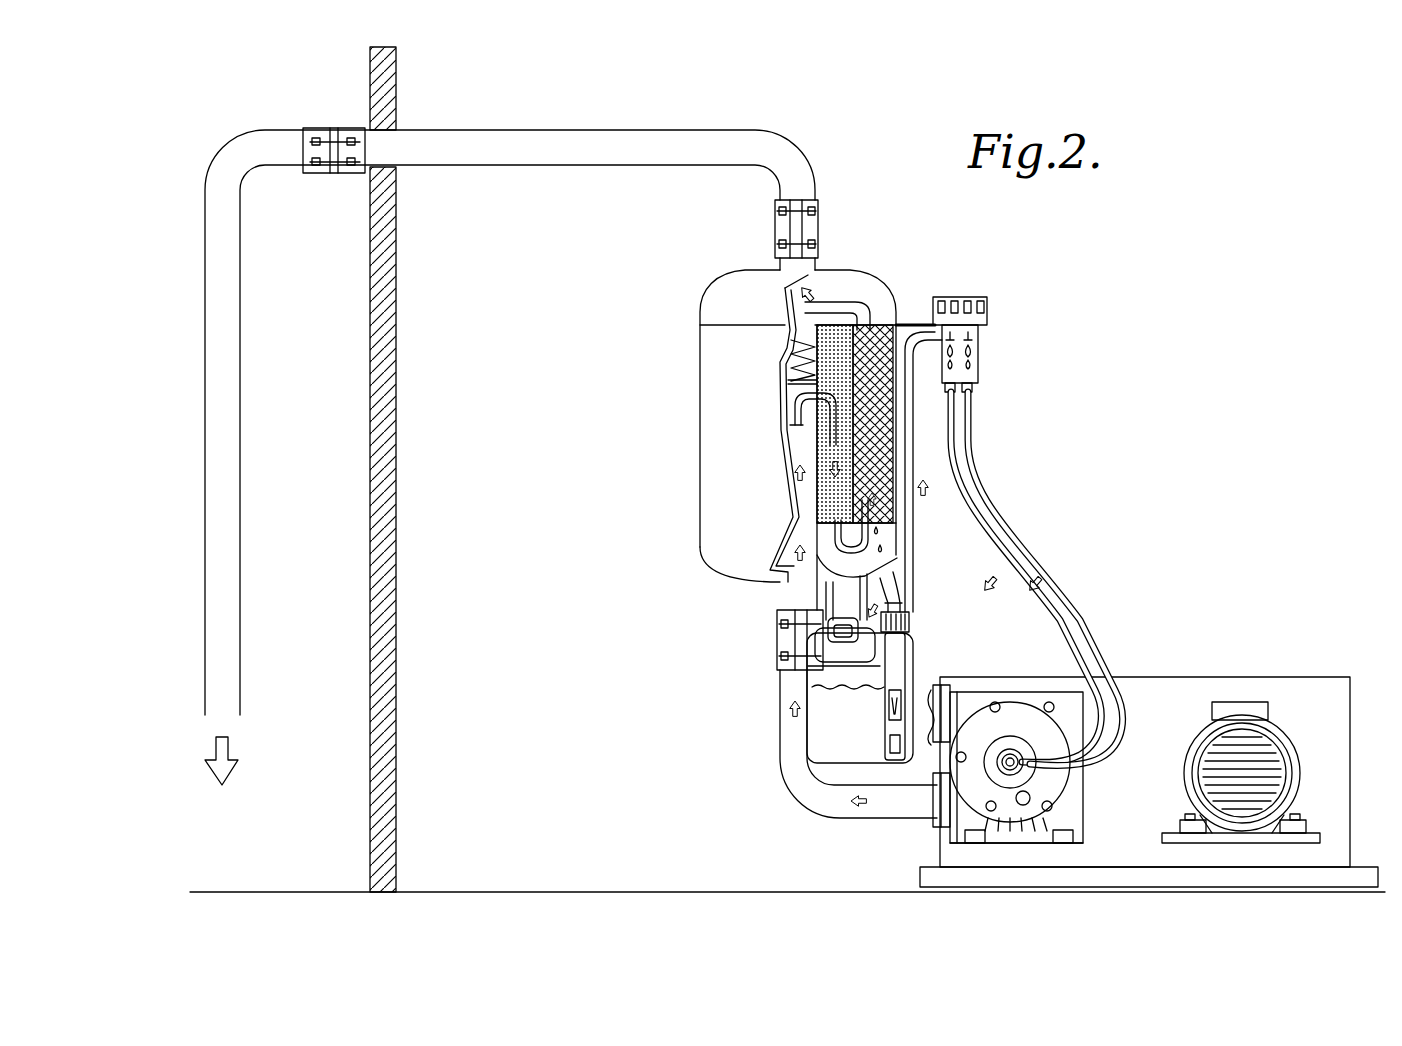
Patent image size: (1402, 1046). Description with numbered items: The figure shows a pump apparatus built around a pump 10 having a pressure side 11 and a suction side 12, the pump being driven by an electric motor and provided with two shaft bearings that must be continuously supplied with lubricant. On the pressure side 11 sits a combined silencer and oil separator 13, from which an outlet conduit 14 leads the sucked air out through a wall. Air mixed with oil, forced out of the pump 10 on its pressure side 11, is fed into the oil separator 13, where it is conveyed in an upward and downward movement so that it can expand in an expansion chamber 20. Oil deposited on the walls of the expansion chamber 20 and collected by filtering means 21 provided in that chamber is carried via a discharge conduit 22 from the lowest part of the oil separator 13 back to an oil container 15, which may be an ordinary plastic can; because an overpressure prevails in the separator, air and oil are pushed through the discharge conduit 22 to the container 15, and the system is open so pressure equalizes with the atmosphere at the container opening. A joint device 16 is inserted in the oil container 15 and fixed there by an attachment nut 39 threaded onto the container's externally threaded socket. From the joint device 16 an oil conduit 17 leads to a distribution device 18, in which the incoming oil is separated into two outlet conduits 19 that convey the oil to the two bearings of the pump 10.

The pump 10 is at (1028, 729).
The pressure side 11 is at (813, 783).
The suction side 12 is at (933, 690).
The combined silencer and oil separator 13 is at (833, 285).
The outlet conduit 14 is at (547, 153).
The oil container 15 is at (827, 733).
The joint device 16 is at (893, 663).
The oil conduit 17 is at (912, 512).
The distribution device 18 is at (980, 330).
The outlet conduits 19 is at (977, 503).
The expansion chamber 20 is at (833, 565).
The filtering means 21 is at (787, 350).
The discharge conduit 22 is at (908, 592).
The attachment nut 39 is at (909, 624).